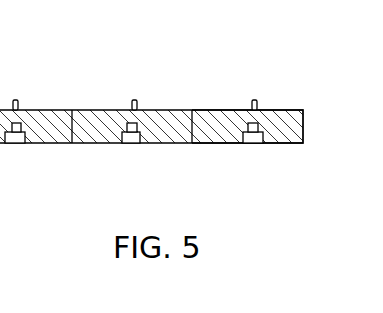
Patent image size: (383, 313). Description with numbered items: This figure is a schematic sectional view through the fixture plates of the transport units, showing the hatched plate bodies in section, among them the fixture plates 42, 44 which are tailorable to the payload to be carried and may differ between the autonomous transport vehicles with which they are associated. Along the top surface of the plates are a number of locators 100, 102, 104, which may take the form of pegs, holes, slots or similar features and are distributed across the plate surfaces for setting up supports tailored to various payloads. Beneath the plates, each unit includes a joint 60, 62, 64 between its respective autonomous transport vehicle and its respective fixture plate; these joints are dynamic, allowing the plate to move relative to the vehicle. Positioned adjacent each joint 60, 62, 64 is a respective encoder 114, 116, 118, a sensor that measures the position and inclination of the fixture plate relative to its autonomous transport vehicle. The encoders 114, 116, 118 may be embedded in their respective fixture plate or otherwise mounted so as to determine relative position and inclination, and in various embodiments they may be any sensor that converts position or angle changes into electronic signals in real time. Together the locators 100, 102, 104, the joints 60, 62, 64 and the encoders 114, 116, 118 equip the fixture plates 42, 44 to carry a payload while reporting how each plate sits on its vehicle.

The fixture plate 42 is at (116, 110).
The fixture plate 44 is at (303, 115).
The joint 60 is at (20, 143).
The joint 62 is at (138, 143).
The joint 64 is at (255, 143).
The locator 100 is at (19, 103).
The locator 102 is at (139, 102).
The locator 104 is at (258, 106).
The encoder 114 is at (22, 125).
The encoder 116 is at (127, 128).
The encoder 118 is at (258, 126).